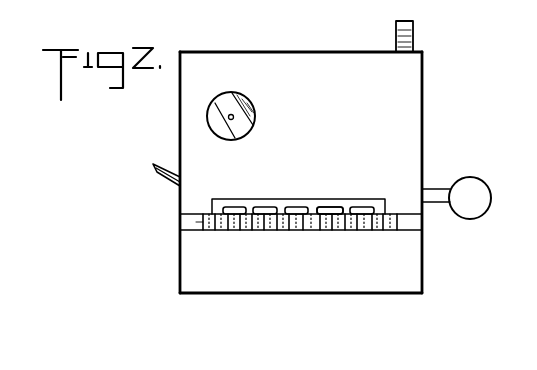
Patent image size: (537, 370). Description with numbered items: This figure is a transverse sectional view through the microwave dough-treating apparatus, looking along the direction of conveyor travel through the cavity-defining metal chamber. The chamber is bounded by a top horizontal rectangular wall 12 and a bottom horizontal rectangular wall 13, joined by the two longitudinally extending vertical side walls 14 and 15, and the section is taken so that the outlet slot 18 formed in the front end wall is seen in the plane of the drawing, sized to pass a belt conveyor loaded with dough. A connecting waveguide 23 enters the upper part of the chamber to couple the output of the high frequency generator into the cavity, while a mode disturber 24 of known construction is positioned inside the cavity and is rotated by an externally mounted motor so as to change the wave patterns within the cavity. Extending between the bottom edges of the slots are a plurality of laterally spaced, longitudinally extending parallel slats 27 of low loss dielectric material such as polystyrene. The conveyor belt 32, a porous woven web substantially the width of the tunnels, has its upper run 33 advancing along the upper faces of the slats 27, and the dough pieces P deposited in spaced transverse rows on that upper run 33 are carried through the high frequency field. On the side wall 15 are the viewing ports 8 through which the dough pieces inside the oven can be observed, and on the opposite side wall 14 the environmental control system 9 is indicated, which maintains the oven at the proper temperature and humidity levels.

The viewing ports 8 is at (159, 182).
The environmental control system 9 is at (477, 178).
The top horizontal rectangular wall 12 is at (325, 49).
The bottom horizontal rectangular wall 13 is at (282, 295).
The vertical side wall 14 is at (423, 106).
The vertical side wall 15 is at (177, 117).
The outlet slot 18 is at (243, 200).
The connecting waveguide 23 is at (409, 35).
The mode disturber 24 is at (250, 82).
The slats 27 is at (252, 232).
The conveyor belt 32 is at (316, 232).
The upper run 33 is at (345, 212).
The dough pieces P is at (292, 204).